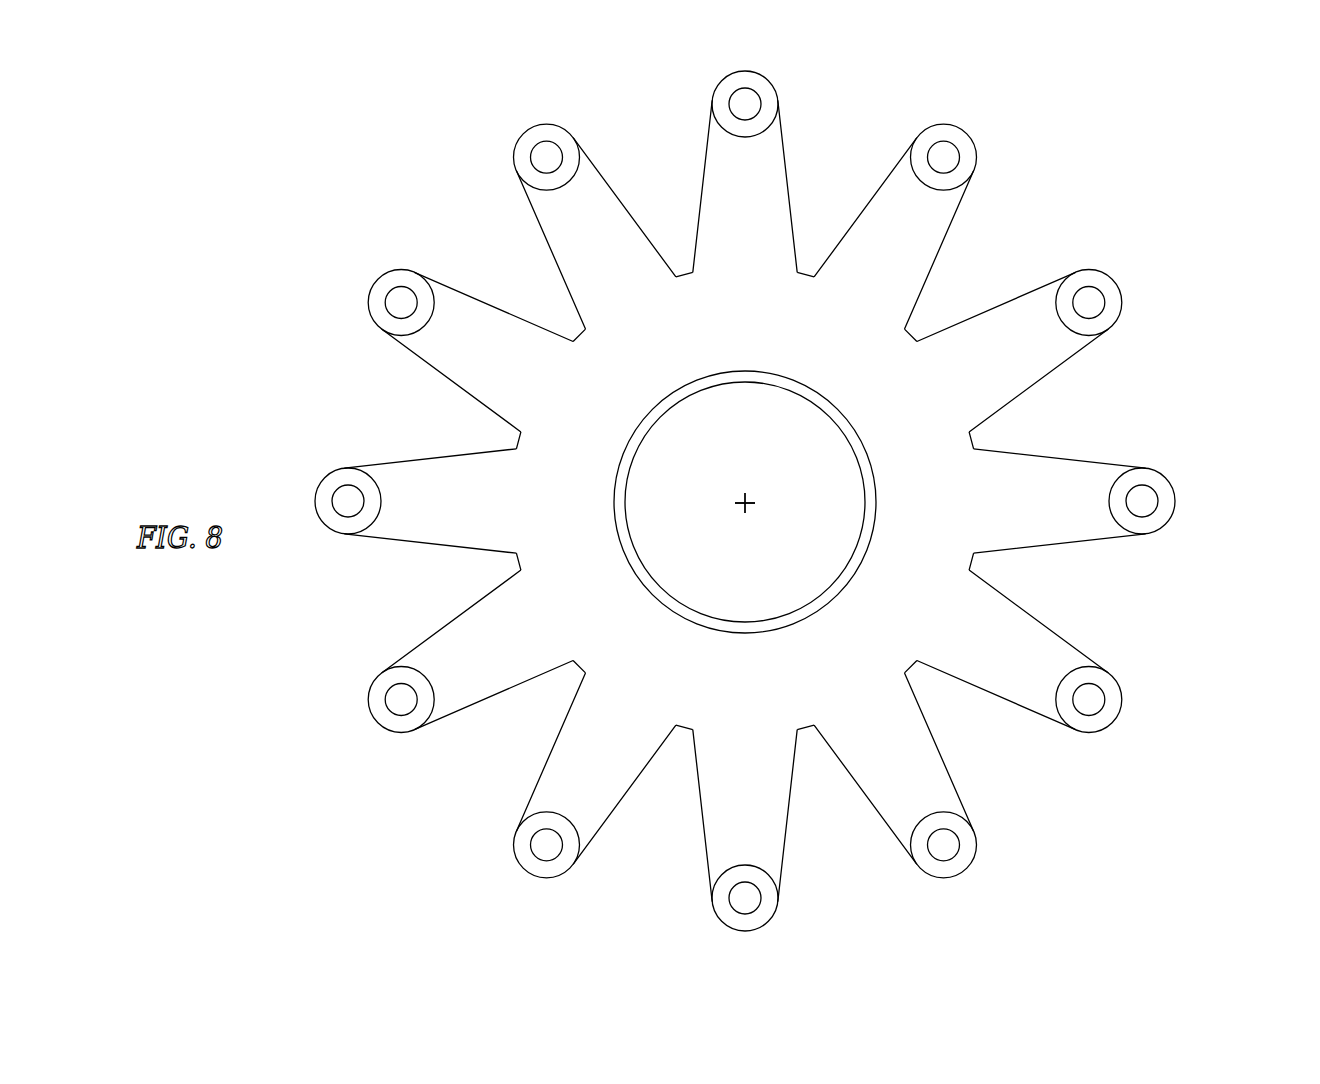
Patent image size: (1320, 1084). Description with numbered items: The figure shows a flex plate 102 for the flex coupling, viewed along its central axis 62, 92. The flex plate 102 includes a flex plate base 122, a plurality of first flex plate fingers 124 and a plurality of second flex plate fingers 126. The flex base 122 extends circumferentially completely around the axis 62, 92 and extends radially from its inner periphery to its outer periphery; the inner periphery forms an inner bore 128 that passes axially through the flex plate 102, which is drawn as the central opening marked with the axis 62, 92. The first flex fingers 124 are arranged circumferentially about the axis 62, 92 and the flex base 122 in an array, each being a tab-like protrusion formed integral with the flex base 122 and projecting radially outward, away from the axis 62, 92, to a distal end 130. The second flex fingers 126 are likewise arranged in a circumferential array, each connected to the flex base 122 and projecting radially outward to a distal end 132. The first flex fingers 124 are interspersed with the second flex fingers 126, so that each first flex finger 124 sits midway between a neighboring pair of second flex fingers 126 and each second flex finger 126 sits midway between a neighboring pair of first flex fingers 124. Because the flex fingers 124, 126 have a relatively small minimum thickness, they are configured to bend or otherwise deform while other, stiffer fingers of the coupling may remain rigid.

The flex plate 102 is at (1172, 135).
The flex plate base 122 is at (928, 319).
The first flex plate fingers 124 is at (802, 172).
The second flex plate fingers 126 is at (630, 192).
The inner bore 128 is at (729, 459).
The distal end of first flex finger 130 is at (740, 72).
The distal end of second flex finger 132 is at (536, 126).
The axis 62 is at (747, 504).
The axis 92 is at (745, 503).